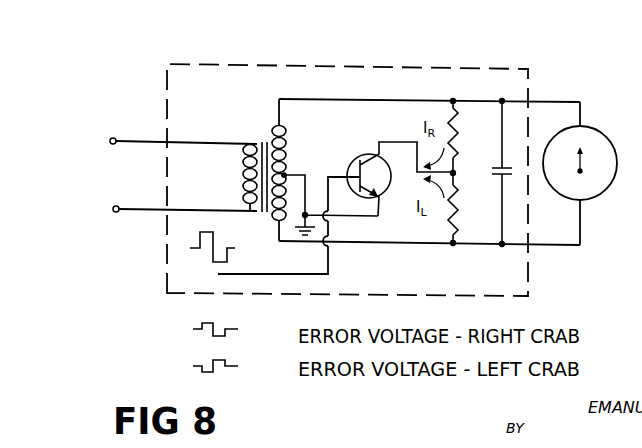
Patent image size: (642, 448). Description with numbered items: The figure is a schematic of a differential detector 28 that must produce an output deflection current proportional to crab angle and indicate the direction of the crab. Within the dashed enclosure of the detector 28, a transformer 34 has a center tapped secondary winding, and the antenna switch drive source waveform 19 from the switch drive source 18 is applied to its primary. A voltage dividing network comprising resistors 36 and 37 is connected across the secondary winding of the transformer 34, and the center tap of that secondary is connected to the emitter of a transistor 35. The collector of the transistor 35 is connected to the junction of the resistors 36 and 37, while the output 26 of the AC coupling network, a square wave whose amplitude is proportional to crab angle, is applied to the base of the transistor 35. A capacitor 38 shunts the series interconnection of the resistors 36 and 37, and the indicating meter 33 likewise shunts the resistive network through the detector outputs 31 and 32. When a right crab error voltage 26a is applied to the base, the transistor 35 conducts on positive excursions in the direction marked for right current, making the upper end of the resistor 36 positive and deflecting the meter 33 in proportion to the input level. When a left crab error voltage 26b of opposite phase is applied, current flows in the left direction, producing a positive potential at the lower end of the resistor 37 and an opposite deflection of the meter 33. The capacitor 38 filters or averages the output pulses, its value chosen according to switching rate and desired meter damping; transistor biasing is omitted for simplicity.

The differential detector 28 is at (328, 65).
The switch drive source of FIG 3 18 is at (72, 174).
The transformer 34 is at (265, 126).
The antenna switching waveform 19 is at (204, 254).
The output of the AC coupling network 26 is at (330, 264).
The transistor 35 is at (360, 160).
The resistor 36 is at (459, 130).
The resistor 37 is at (459, 205).
The capacitor 38 is at (496, 168).
The detector output 31 is at (565, 102).
The detector output 32 is at (565, 248).
The zero center indicator 33 is at (607, 137).
The right crab signal 26a is at (223, 325).
The left crab error voltage 26b is at (223, 360).